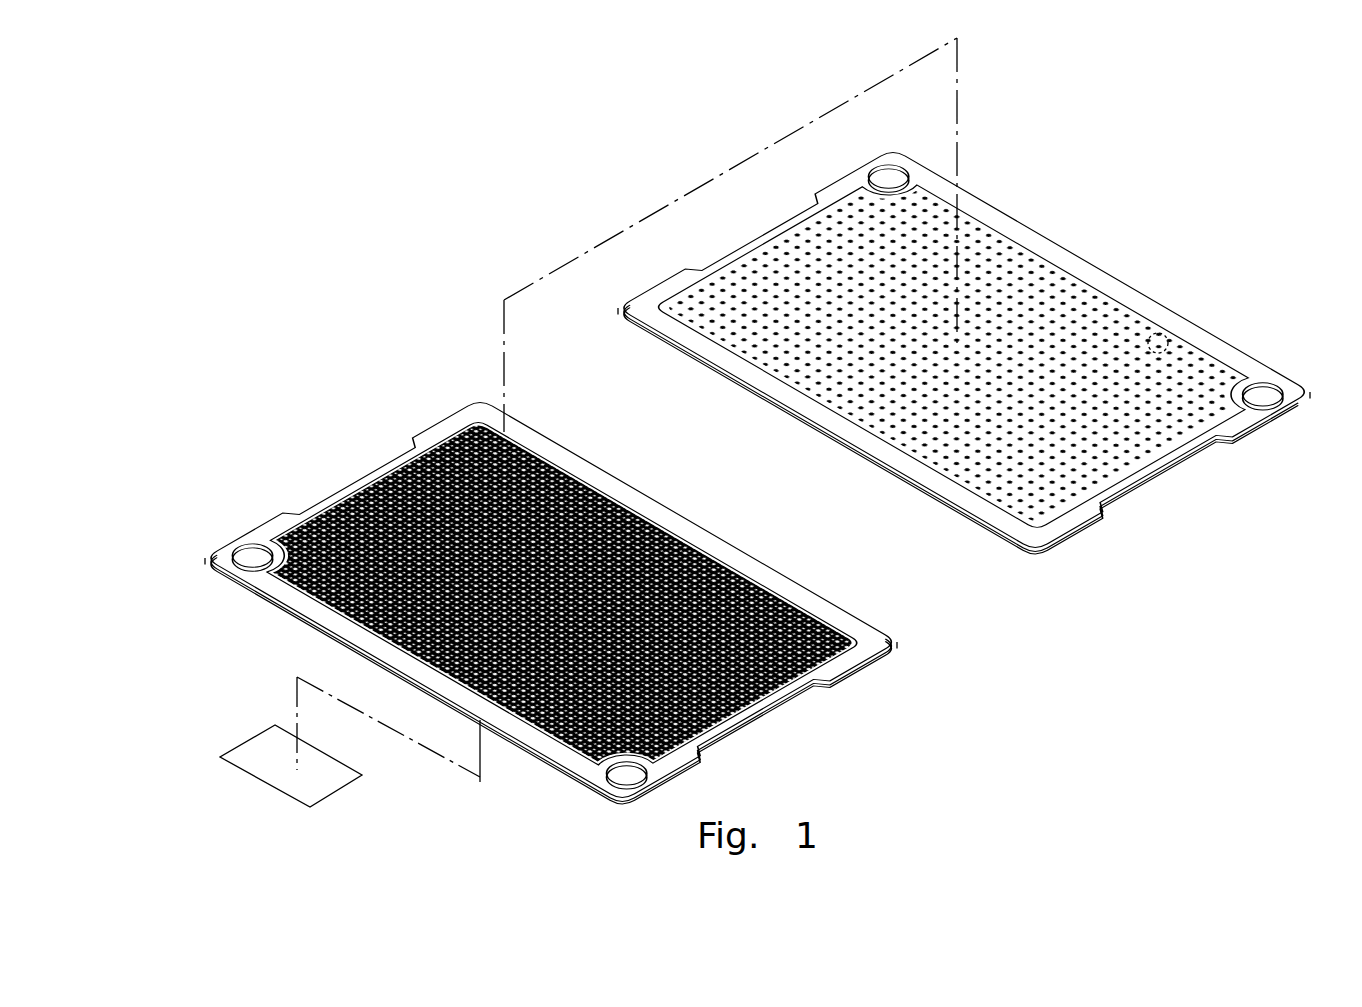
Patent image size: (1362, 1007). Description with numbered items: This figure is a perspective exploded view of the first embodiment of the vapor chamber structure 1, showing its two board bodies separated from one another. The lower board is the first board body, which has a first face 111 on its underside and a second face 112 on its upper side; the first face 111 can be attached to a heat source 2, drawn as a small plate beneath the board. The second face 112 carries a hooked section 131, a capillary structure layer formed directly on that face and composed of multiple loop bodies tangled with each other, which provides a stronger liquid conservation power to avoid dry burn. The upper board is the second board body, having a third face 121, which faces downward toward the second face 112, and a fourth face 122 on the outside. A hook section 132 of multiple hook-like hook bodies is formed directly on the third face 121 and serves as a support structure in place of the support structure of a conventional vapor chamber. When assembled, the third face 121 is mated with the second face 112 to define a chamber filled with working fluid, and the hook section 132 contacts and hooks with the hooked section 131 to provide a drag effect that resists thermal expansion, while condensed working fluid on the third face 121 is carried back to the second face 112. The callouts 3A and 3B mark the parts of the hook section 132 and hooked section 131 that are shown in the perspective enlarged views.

The vapor chamber structure 1 is at (1212, 180).
The heat source 2 is at (265, 767).
The enlarged view region 3A is at (1160, 333).
The enlarged view region 3B is at (807, 612).
The first face 111 is at (758, 703).
The second face 112 is at (893, 643).
The third face 121 is at (1180, 393).
The fourth face 122 is at (1083, 540).
The hooked section 131 is at (420, 443).
The hook section 132 is at (690, 317).